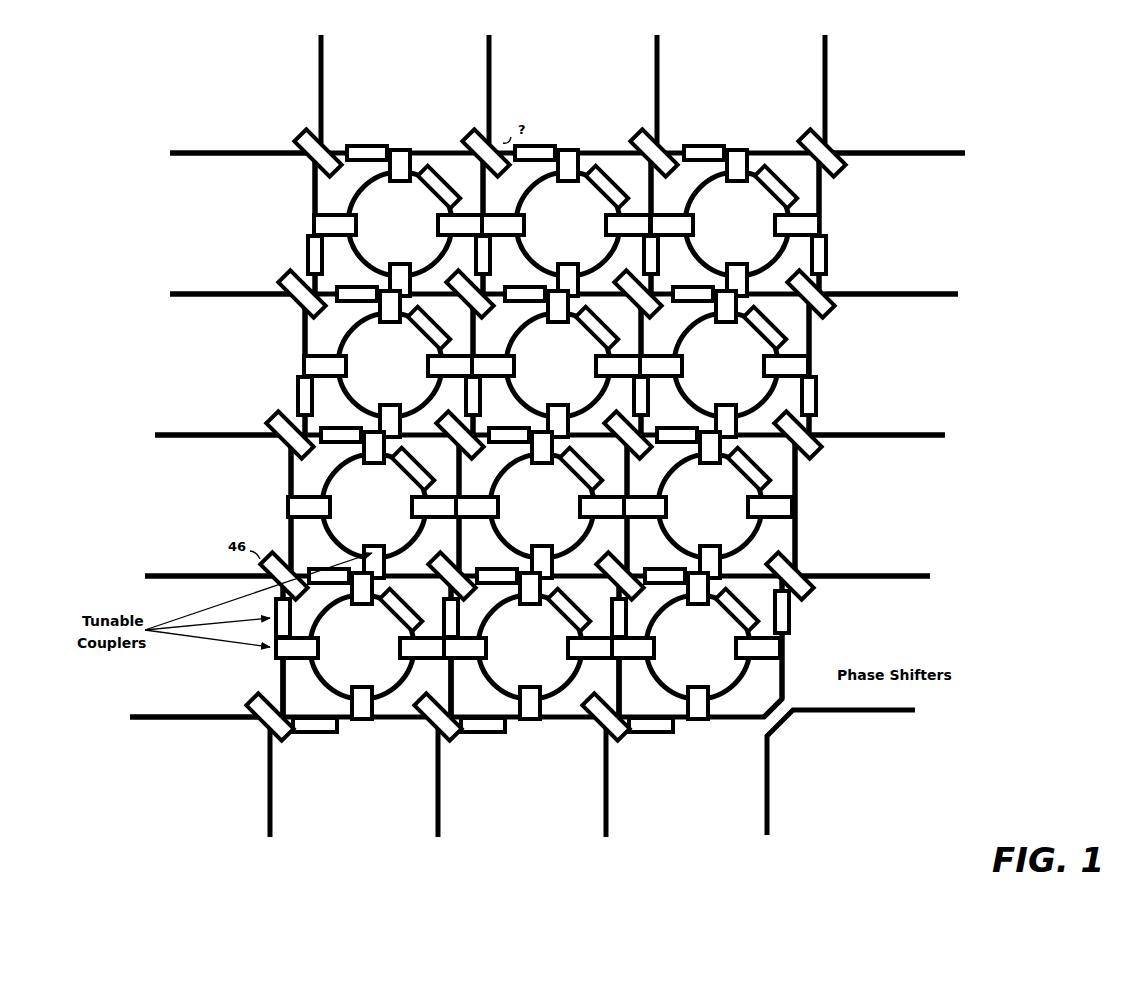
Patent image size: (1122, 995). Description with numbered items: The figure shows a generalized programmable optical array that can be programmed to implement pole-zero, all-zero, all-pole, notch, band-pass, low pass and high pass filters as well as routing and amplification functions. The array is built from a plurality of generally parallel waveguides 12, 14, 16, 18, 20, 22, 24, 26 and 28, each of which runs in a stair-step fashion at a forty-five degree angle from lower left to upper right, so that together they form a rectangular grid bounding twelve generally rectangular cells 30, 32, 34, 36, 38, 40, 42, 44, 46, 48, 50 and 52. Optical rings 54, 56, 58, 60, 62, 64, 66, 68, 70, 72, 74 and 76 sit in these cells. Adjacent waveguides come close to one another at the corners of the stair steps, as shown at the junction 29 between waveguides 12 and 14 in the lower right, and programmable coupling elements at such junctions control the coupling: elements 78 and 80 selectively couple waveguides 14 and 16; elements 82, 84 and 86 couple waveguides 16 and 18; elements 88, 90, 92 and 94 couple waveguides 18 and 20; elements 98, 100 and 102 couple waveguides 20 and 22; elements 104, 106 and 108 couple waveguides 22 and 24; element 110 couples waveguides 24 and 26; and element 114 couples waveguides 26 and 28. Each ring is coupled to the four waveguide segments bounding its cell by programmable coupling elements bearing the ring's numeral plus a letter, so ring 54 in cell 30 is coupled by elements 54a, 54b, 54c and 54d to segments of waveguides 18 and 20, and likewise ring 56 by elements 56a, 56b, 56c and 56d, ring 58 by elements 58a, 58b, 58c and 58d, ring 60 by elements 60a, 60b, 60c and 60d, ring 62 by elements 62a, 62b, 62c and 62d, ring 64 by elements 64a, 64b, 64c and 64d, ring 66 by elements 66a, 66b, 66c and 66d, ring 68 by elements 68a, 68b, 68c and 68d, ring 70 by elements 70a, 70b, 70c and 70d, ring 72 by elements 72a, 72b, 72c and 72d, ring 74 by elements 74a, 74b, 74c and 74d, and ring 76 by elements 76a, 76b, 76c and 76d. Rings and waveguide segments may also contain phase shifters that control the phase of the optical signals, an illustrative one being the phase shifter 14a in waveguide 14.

The waveguide 12 is at (915, 710).
The waveguide 14 is at (930, 576).
The phase shifter 14a is at (802, 636).
The waveguide 16 is at (945, 435).
The waveguide 18 is at (958, 294).
The waveguide 20 is at (965, 153).
The waveguide 22 is at (823, 38).
The waveguide 24 is at (655, 44).
The waveguide 26 is at (489, 44).
The waveguide 28 is at (319, 52).
The junction 29 is at (761, 732).
The cell 30 is at (362, 647).
The cell 32 is at (530, 647).
The cell 34 is at (698, 647).
The cell 36 is at (374, 506).
The cell 38 is at (542, 506).
The cell 40 is at (710, 506).
The cell 42 is at (390, 365).
The cell 44 is at (558, 365).
The cell 46 is at (726, 365).
The cell 48 is at (400, 224).
The cell 50 is at (568, 224).
The cell 52 is at (737, 224).
The optical ring 54 is at (308, 635).
The programmable coupling element 54a is at (340, 585).
The programmable coupling element 54b is at (428, 631).
The programmable coupling element 54c is at (374, 705).
The programmable coupling element 54d is at (312, 667).
The optical ring 56 is at (476, 635).
The programmable coupling element 56a is at (508, 585).
The programmable coupling element 56b is at (596, 631).
The programmable coupling element 56c is at (542, 705).
The programmable coupling element 56d is at (480, 667).
The optical ring 58 is at (644, 635).
The programmable coupling element 58a is at (758, 620).
The programmable coupling element 58b is at (758, 648).
The programmable coupling element 58c is at (710, 705).
The programmable coupling element 58d is at (648, 667).
The optical ring 60 is at (320, 494).
The programmable coupling element 60a is at (352, 444).
The programmable coupling element 60b is at (440, 490).
The programmable coupling element 60c is at (386, 564).
The programmable coupling element 60d is at (324, 526).
The optical ring 62 is at (488, 494).
The programmable coupling element 62a is at (520, 444).
The programmable coupling element 62b is at (608, 490).
The programmable coupling element 62c is at (554, 564).
The programmable coupling element 62d is at (492, 526).
The optical ring 64 is at (656, 494).
The programmable coupling element 64a is at (688, 444).
The programmable coupling element 64b is at (776, 490).
The programmable coupling element 64c is at (722, 564).
The programmable coupling element 64d is at (660, 526).
The optical ring 66 is at (336, 353).
The programmable coupling element 66a is at (368, 303).
The programmable coupling element 66b is at (456, 349).
The programmable coupling element 66c is at (402, 423).
The programmable coupling element 66d is at (340, 385).
The optical ring 68 is at (504, 353).
The programmable coupling element 68a is at (536, 303).
The programmable coupling element 68b is at (624, 349).
The programmable coupling element 68c is at (570, 423).
The programmable coupling element 68d is at (508, 385).
The optical ring 70 is at (672, 353).
The programmable coupling element 70a is at (704, 303).
The programmable coupling element 70b is at (792, 349).
The programmable coupling element 70c is at (738, 423).
The programmable coupling element 70d is at (676, 385).
The optical ring 72 is at (356, 200).
The programmable coupling element 72a is at (404, 152).
The programmable coupling element 72b is at (466, 208).
The programmable coupling element 72c is at (412, 282).
The programmable coupling element 72d is at (350, 244).
The optical ring 74 is at (524, 200).
The programmable coupling element 74a is at (572, 152).
The programmable coupling element 74b is at (634, 208).
The programmable coupling element 74c is at (580, 282).
The programmable coupling element 74d is at (518, 244).
The optical ring 76 is at (693, 200).
The programmable coupling element 76a is at (741, 152).
The programmable coupling element 76b is at (803, 208).
The programmable coupling element 76c is at (749, 282).
The programmable coupling element 76d is at (687, 244).
The programmable coupling element 78 is at (621, 744).
The programmable coupling element 80 is at (804, 561).
The programmable coupling element 82 is at (457, 744).
The programmable coupling element 84 is at (609, 593).
The programmable coupling element 86 is at (811, 422).
The programmable coupling element 88 is at (283, 744).
The programmable coupling element 90 is at (441, 593).
The programmable coupling element 92 is at (621, 453).
The programmable coupling element 94 is at (825, 282).
The programmable coupling element 98 is at (453, 453).
The programmable coupling element 100 is at (632, 308).
The programmable coupling element 102 is at (835, 139).
The programmable coupling element 104 is at (266, 415).
The programmable coupling element 106 is at (463, 308).
The programmable coupling element 108 is at (662, 139).
The programmable coupling element 110 is at (284, 272).
The programmable coupling element 114 is at (326, 142).